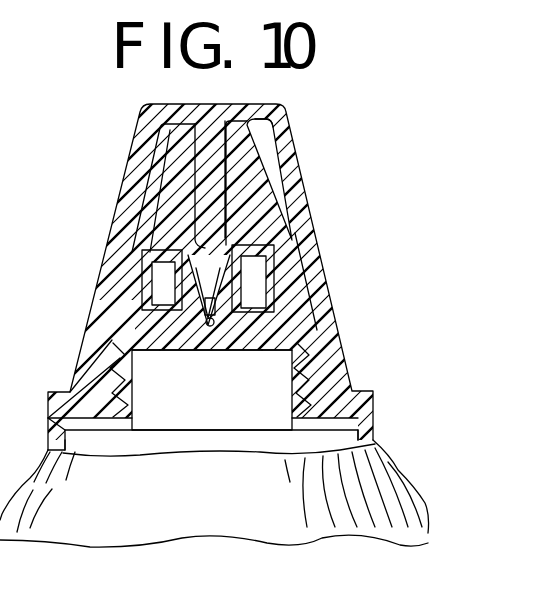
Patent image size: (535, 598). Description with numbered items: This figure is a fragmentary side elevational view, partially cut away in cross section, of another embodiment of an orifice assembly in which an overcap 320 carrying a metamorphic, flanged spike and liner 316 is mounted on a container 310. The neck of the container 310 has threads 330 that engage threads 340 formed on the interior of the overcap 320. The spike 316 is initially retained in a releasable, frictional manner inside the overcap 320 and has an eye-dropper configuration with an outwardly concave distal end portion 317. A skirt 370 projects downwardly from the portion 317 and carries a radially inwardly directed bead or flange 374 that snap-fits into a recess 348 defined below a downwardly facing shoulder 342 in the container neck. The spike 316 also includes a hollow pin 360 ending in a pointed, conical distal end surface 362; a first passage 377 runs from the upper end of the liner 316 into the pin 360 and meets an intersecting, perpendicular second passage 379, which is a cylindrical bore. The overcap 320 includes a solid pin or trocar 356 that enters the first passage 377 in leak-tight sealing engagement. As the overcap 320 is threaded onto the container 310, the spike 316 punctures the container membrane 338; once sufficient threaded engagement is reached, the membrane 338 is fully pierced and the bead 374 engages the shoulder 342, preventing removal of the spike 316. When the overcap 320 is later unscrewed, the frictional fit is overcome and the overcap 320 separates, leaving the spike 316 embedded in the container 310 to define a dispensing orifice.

The container 310 is at (400, 467).
The metamorphic spike 316 is at (290, 200).
The outwardly concave distal end portion 317 is at (290, 125).
The overcap 320 is at (302, 153).
The threads 330 is at (328, 355).
The container membrane 338 is at (165, 268).
The threads 340 is at (316, 330).
The shoulder 342 is at (145, 331).
The recess 348 is at (135, 350).
The solid pin or trocar 356 is at (205, 172).
The hollow pin 360 is at (178, 302).
The distal end surface 362 is at (222, 346).
The skirt 370 is at (288, 286).
The bead or flange 374 is at (143, 324).
The first passage 377 is at (298, 233).
The second passage 379 is at (233, 348).